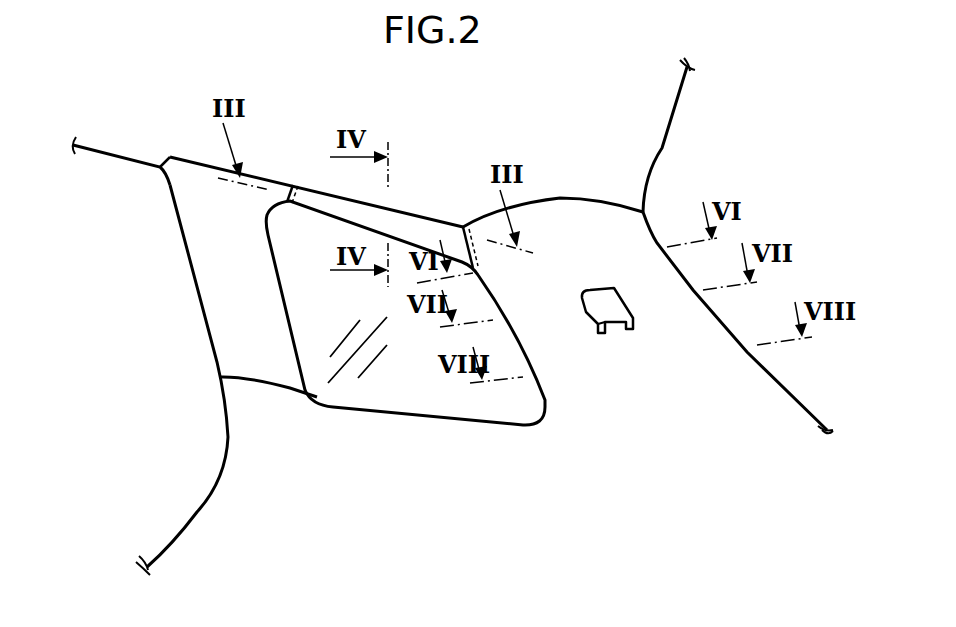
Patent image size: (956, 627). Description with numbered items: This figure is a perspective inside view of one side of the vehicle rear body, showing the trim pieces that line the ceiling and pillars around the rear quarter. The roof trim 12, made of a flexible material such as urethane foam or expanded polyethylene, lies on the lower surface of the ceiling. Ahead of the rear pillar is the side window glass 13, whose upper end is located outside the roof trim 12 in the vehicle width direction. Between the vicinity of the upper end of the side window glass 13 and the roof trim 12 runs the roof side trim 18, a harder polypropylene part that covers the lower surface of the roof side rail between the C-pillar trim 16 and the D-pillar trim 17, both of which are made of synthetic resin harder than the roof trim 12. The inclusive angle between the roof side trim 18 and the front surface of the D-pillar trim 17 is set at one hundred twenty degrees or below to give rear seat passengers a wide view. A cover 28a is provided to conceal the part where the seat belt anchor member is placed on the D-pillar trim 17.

The roof trim 12 is at (142, 140).
The C-pillar trim 16 is at (207, 268).
The roof side trim 18 is at (410, 222).
The side window glass 13 is at (447, 402).
The D-pillar trim 17 is at (757, 412).
The cover 28a is at (597, 298).